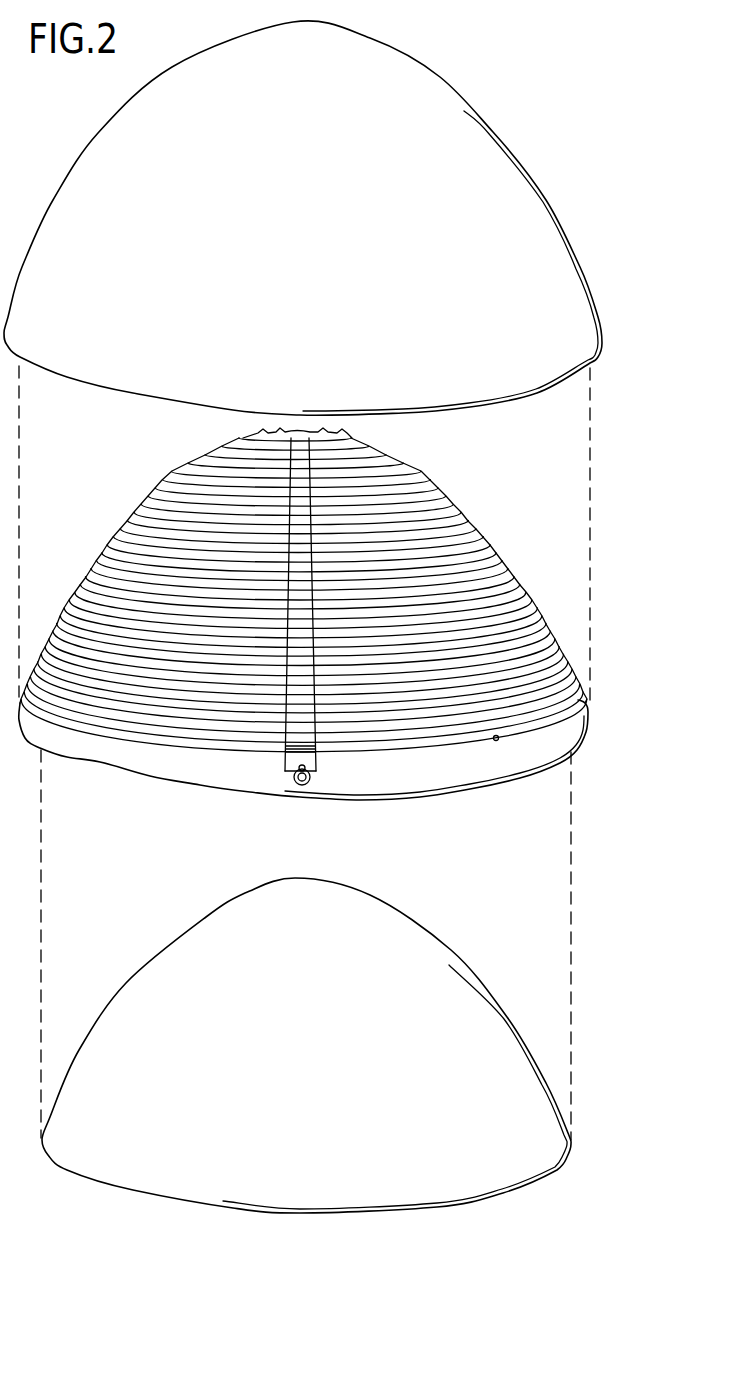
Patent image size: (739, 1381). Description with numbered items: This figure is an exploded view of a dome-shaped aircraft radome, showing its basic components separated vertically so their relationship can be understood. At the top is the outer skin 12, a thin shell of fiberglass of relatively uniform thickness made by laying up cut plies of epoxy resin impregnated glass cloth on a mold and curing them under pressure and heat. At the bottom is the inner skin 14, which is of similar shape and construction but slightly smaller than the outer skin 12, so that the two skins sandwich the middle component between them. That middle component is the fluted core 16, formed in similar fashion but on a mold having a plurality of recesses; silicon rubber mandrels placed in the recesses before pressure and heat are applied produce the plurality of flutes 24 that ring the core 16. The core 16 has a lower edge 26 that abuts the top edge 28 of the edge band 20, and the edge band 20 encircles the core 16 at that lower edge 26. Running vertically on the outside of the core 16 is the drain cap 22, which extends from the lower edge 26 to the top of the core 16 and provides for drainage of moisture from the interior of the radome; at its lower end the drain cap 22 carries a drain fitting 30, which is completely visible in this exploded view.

The outer skin 12 is at (430, 90).
The inner skin 14 is at (403, 935).
The fluted core 16 is at (303, 590).
The edge band 20 is at (450, 775).
The drain cap 22 is at (297, 460).
The flutes 24 is at (495, 572).
The lower edge 26 is at (538, 728).
The top edge 28 is at (497, 740).
The drain fitting 30 is at (310, 782).